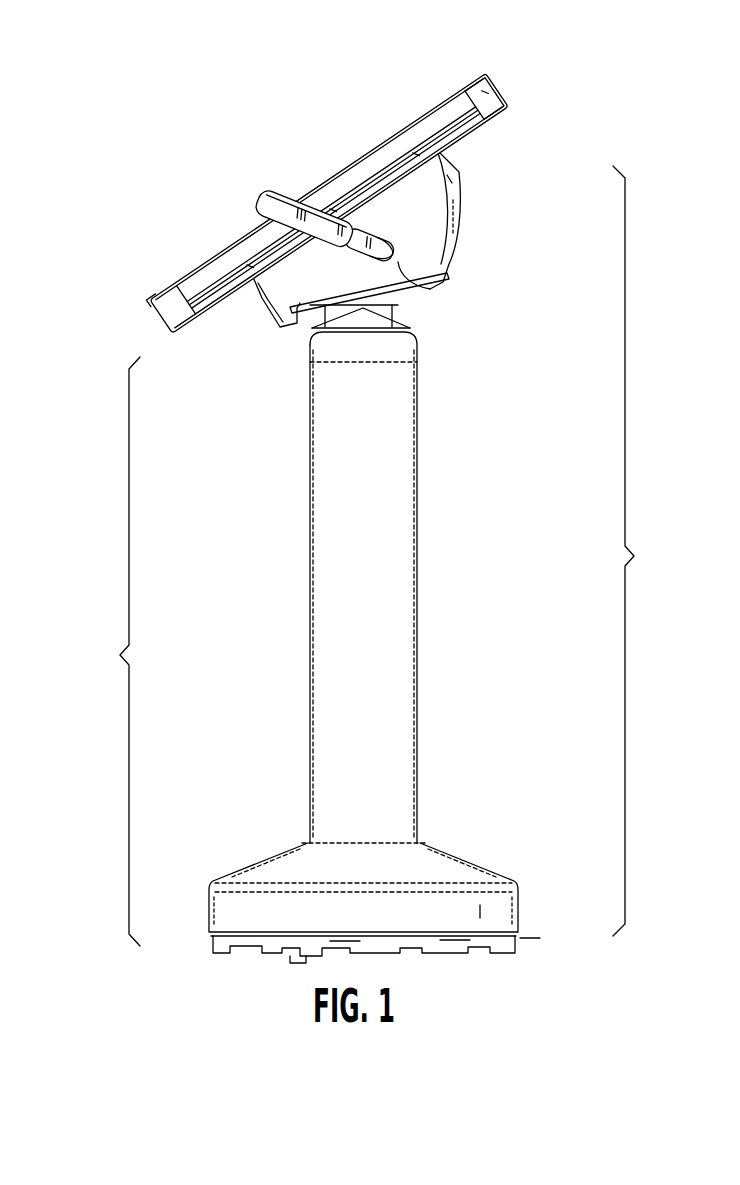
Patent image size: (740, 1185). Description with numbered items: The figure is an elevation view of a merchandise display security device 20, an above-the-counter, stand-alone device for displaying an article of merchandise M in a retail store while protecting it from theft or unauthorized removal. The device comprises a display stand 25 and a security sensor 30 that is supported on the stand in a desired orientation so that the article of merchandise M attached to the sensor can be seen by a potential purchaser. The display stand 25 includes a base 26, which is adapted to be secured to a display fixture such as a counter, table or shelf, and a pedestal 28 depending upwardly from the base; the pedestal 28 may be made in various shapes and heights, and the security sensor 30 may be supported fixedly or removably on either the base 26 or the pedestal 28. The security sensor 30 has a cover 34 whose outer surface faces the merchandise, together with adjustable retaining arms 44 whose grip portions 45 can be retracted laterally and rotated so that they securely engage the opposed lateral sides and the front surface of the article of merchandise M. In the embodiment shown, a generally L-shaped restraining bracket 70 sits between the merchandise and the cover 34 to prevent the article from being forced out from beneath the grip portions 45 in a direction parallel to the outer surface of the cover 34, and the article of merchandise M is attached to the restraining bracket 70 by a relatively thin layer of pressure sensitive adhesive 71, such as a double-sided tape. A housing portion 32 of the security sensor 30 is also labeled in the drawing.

The merchandise display security device 20 is at (638, 551).
The display stand 25 is at (116, 651).
The base 26 is at (285, 862).
The pedestal 28 is at (327, 665).
The security sensor 30 is at (492, 181).
The head housing 32 is at (452, 240).
The cover 34 is at (462, 163).
The retaining arms 44 is at (392, 252).
The grip portions 45 is at (255, 203).
The restraining bracket 70 is at (160, 323).
The pressure sensitive adhesive 71 is at (497, 103).
The article of merchandise M is at (370, 142).